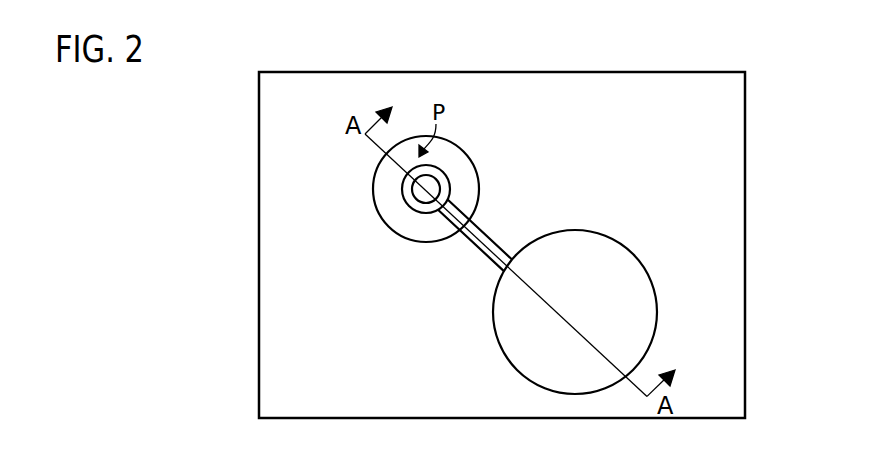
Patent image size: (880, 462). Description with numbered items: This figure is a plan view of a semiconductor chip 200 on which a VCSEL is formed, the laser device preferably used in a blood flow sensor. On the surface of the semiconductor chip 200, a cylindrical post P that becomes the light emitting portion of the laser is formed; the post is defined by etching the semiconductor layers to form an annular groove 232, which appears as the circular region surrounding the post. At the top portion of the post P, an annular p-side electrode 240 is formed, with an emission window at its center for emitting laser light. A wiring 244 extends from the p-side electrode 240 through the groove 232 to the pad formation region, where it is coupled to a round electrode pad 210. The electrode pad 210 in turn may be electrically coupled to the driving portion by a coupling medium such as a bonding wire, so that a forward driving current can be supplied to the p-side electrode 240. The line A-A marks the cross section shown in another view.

The semiconductor chip 200 is at (743, 167).
The electrode pad 210 is at (628, 272).
The annular groove 232 is at (448, 162).
The p-side electrode 240 is at (408, 198).
The wiring 244 is at (480, 223).